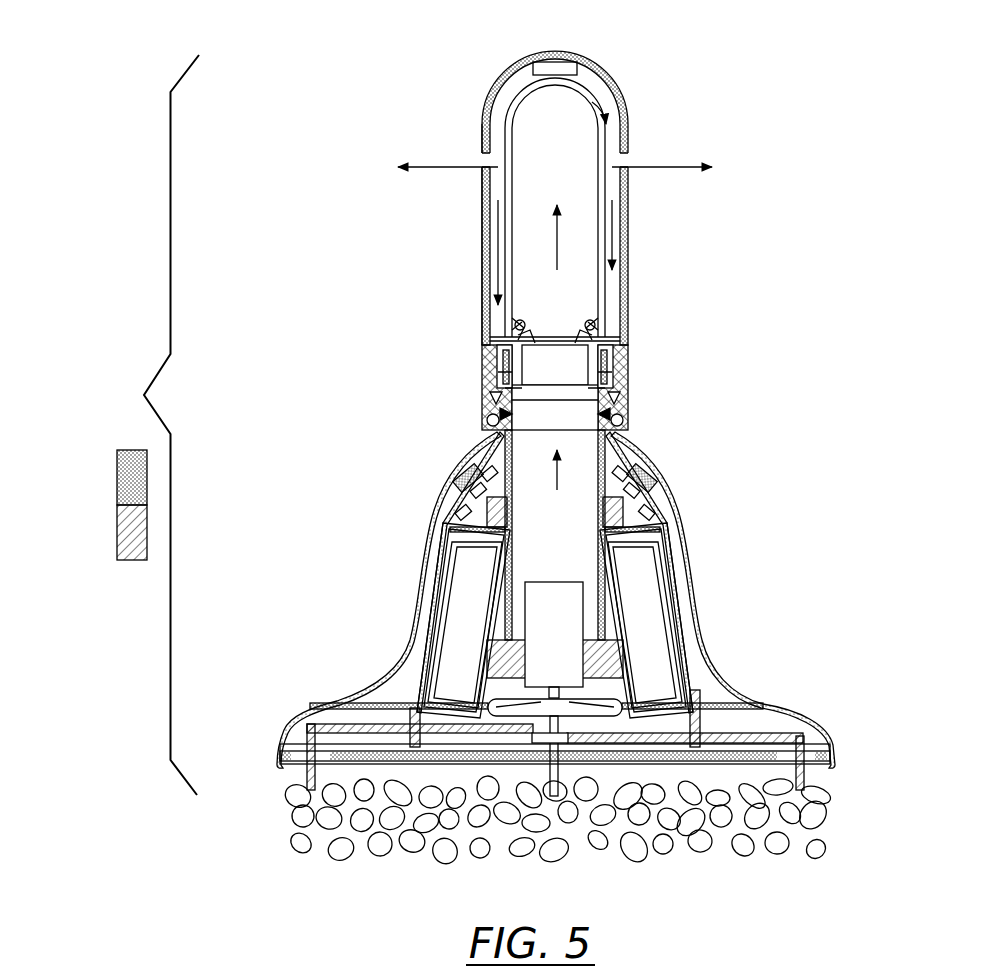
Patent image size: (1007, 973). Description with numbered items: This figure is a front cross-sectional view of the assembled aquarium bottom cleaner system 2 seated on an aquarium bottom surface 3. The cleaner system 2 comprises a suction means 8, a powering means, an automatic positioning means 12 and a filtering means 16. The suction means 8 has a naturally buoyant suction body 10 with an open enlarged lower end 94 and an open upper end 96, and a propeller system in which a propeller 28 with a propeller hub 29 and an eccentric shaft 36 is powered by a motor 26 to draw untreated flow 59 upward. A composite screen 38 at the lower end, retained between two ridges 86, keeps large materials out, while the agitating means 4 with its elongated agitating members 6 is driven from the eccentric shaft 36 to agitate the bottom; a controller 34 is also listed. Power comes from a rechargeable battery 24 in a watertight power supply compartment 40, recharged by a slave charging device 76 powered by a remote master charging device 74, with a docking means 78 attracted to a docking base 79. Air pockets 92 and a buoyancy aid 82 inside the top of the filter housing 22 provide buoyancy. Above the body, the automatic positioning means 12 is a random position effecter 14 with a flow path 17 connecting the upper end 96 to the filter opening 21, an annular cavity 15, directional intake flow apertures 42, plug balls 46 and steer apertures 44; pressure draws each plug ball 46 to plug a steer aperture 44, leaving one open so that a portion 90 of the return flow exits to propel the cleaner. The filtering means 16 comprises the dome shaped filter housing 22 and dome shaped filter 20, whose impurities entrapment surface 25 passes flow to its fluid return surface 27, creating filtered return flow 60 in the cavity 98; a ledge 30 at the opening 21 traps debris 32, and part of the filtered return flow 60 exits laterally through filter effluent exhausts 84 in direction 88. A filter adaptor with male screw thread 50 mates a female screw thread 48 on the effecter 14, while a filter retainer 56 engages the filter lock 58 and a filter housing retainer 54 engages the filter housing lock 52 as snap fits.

The aquarium bottom cleaner system 2 is at (118, 404).
The aquarium bottom surface 3 is at (805, 830).
The agitating means 4 is at (255, 748).
The elongated agitating member 6 is at (278, 778).
The suction means 8 is at (295, 590).
The suction body 10 is at (762, 693).
The automatic positioning means 12 is at (398, 417).
The random position effecter 14 is at (629, 410).
The annular cavity 15 is at (505, 366).
The filtering means 16 is at (403, 238).
The flow path 17 is at (575, 425).
The filter 20 is at (627, 156).
The filter opening 21 is at (505, 355).
The filter housing 22 is at (617, 83).
The rechargeable battery 24 is at (447, 575).
The impurities entrapment surface of filter 25 is at (512, 192).
The motor 26 is at (584, 600).
The fluid return surface of filter 27 is at (603, 190).
The propeller 28 is at (615, 660).
The propeller hub 29 is at (603, 708).
The ledge 30 is at (600, 305).
The debris 32 is at (595, 318).
The controller 34 is at (490, 512).
The eccentric shaft 36 is at (505, 782).
The composite screen 38 is at (362, 766).
The power supply compartment 40 is at (433, 540).
The directional intake flow aperture 42 is at (494, 395).
The steer aperture 44 is at (486, 412).
The exhaust flow plug ball 46 is at (492, 426).
The female screw thread 48 is at (612, 374).
The male screw thread 50 is at (626, 400).
The filter housing lock 52 is at (615, 360).
The filter housing retainer 54 is at (612, 350).
The filter retainer 56 is at (525, 342).
The filter lock 58 is at (520, 322).
The untreated flow 59 is at (557, 226).
The filtered return flow 60 is at (607, 104).
The master charging device 74 is at (117, 530).
The slave charging device 76 is at (460, 500).
The docking means 78 is at (462, 480).
The docking base 79 is at (117, 472).
The buoyancy aid 82 is at (556, 62).
The filter effluent exhaust 84 is at (489, 170).
The ridge 86 is at (818, 738).
The portion of filtered return flow through filter effluent exhaust 88 is at (422, 166).
The portion of filtered return flow through steer aperture 90 is at (606, 338).
The air pocket 92 is at (695, 703).
The enlarged lower end of suction body 94 is at (868, 745).
The upper end of suction body 96 is at (778, 440).
The cavity defined by fluid return surface of filter and interior surface of filter 98 is at (486, 126).